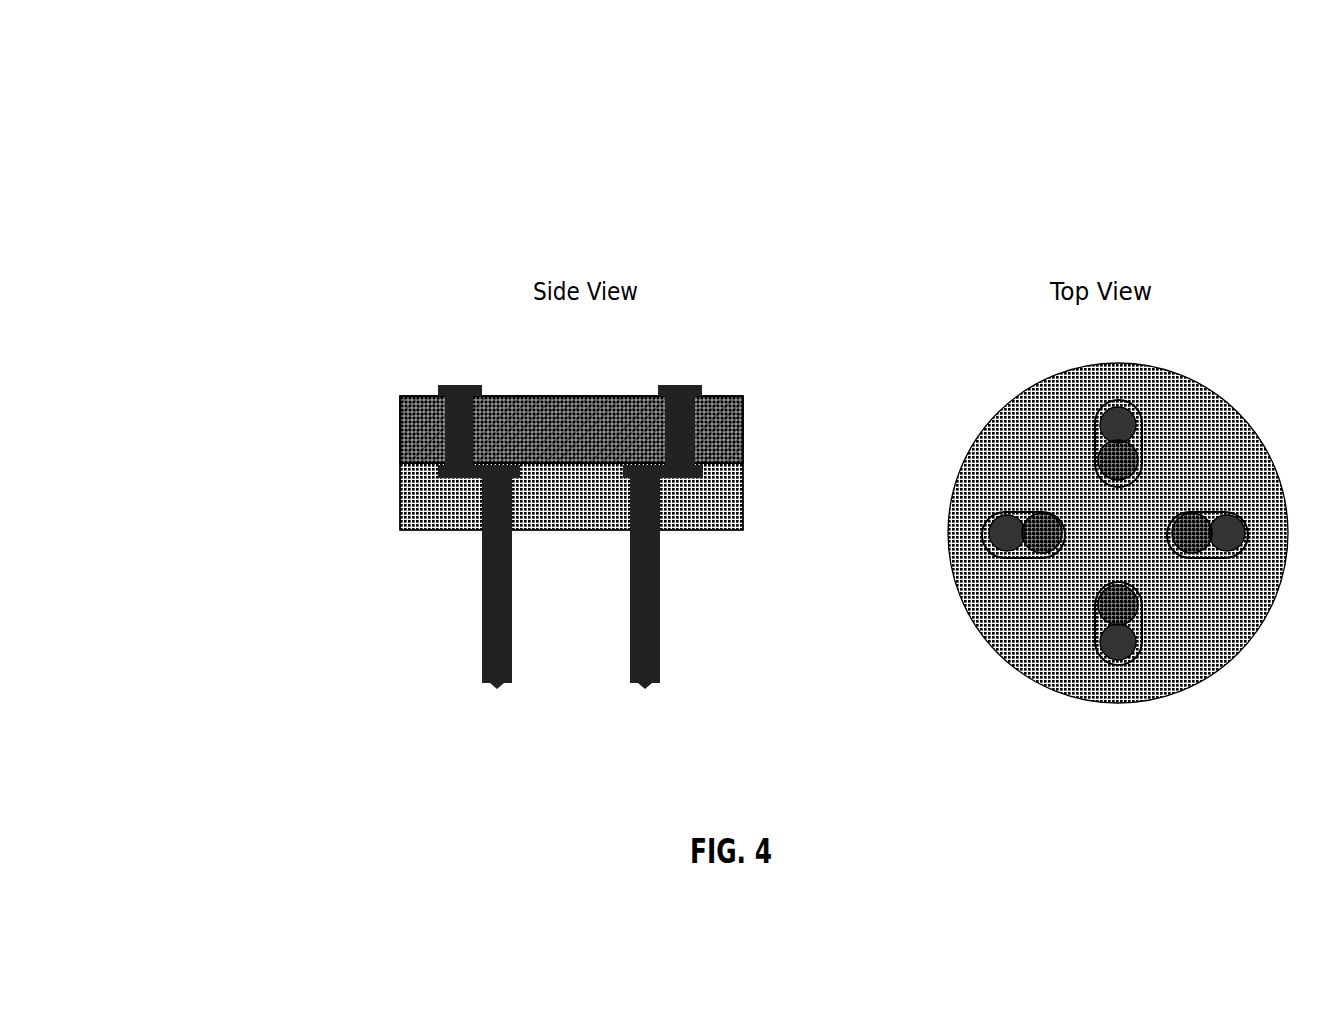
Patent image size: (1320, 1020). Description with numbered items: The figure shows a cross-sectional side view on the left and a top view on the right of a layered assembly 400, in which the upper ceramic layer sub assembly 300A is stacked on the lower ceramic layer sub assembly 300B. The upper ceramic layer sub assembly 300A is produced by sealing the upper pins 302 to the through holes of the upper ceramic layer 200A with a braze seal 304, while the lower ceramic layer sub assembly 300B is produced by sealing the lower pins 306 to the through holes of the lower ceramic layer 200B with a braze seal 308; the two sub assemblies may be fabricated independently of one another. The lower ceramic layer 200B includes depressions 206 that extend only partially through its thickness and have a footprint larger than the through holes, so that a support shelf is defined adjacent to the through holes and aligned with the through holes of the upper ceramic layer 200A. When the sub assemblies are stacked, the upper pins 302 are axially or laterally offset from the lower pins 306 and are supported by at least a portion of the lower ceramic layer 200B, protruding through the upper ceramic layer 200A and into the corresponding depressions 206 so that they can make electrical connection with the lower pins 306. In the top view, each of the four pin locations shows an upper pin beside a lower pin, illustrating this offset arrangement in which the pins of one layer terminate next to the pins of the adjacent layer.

The layered assembly 400 is at (750, 182).
The upper pins 302 is at (1092, 413).
The braze seal 304 is at (1090, 415).
The braze seal 308 is at (570, 471).
The lower pins 306 is at (668, 580).
The depressions 206 is at (658, 503).
The upper ceramic layer sub assembly 300A is at (400, 432).
The upper ceramic layer 200A is at (448, 382).
The lower ceramic layer sub assembly 300B is at (400, 497).
The lower ceramic layer 200B is at (450, 508).